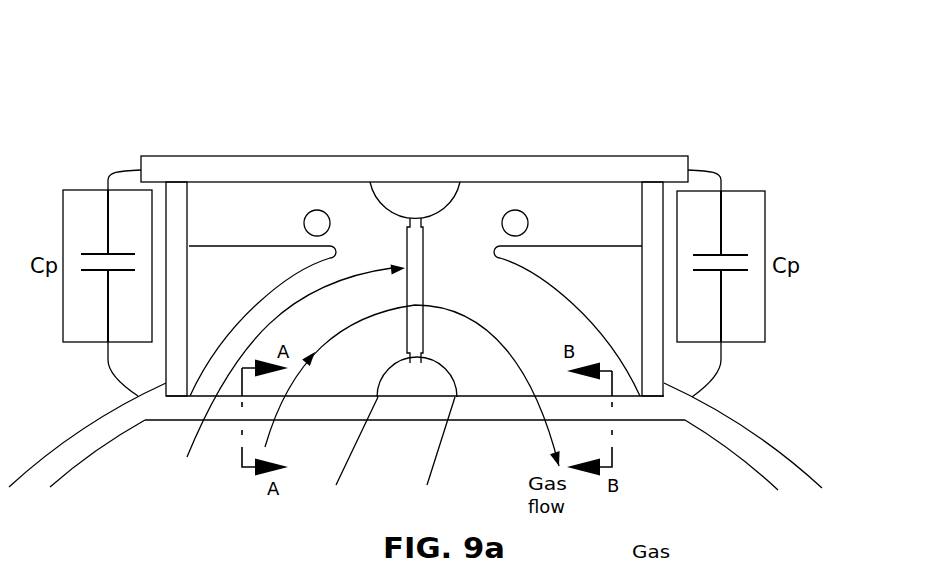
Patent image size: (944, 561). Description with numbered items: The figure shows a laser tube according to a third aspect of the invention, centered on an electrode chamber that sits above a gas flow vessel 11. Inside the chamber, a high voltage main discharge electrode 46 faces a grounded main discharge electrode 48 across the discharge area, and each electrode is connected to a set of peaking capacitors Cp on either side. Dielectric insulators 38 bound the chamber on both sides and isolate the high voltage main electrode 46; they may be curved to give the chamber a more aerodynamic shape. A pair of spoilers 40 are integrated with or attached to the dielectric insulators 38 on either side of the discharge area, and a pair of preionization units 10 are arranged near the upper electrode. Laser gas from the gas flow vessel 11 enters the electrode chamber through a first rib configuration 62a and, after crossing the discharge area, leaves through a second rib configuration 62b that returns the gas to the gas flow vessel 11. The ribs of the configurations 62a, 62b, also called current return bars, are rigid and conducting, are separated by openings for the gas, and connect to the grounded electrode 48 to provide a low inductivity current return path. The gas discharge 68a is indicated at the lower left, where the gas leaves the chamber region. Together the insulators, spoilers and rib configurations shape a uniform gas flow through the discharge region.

The dielectric insulators 38 is at (653, 200).
The spoilers 40 is at (596, 275).
The preionization units 10 is at (505, 205).
The main discharge electrode 46 is at (404, 207).
The main discharge electrode 48 is at (404, 390).
The gas flow vessel 11 is at (750, 440).
The first rib configuration 62a is at (156, 432).
The second rib configuration 62b is at (662, 432).
The gas discharge 68a is at (273, 413).